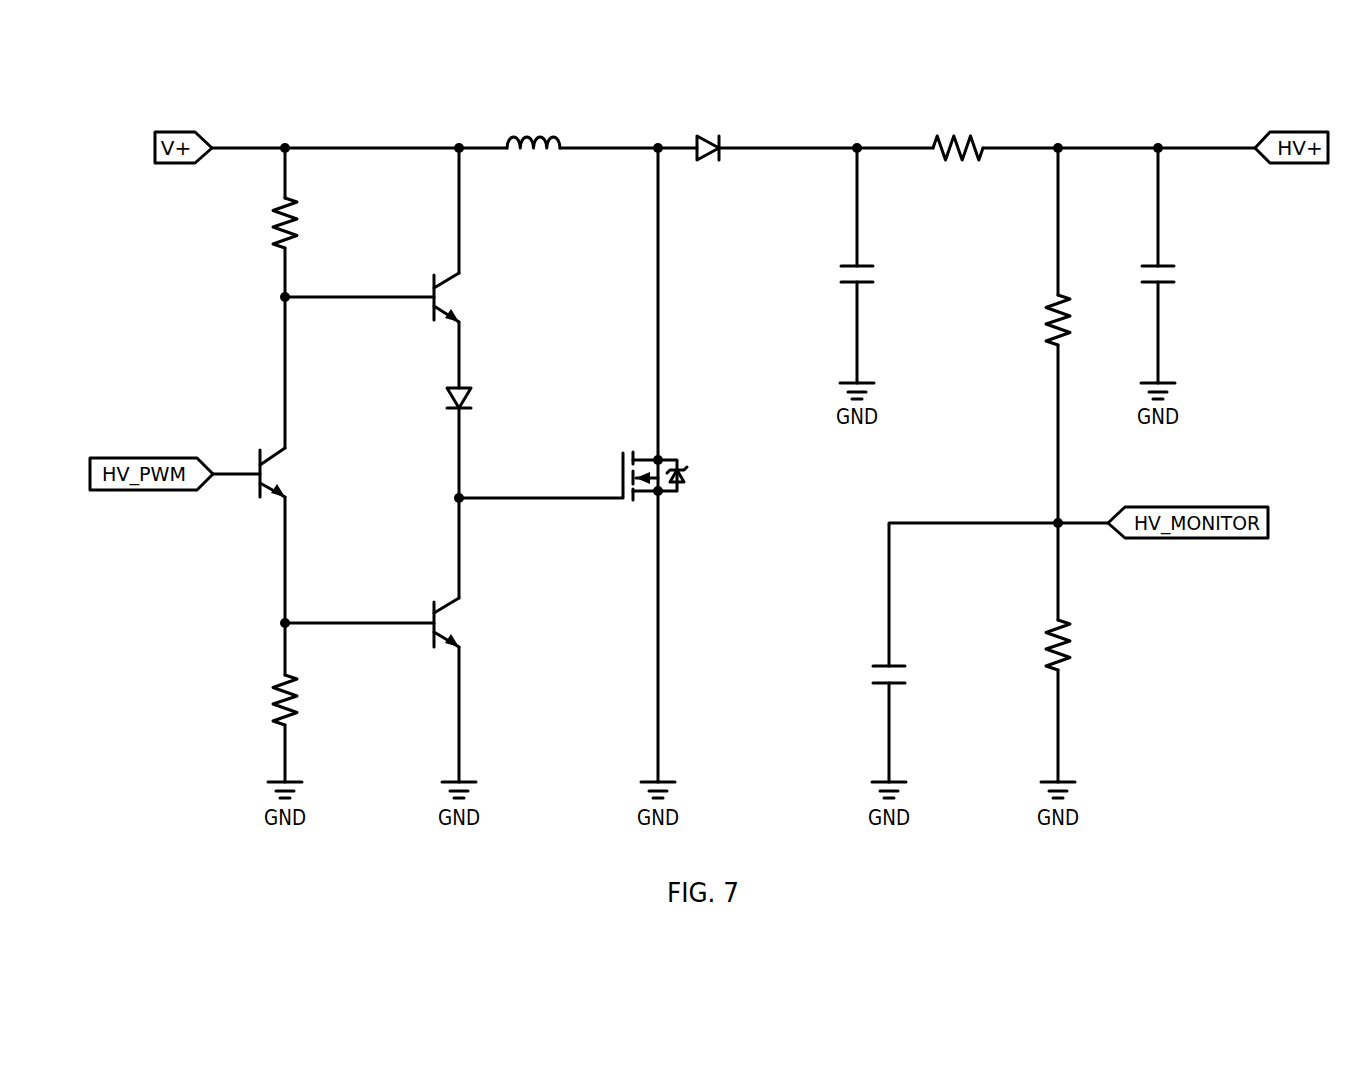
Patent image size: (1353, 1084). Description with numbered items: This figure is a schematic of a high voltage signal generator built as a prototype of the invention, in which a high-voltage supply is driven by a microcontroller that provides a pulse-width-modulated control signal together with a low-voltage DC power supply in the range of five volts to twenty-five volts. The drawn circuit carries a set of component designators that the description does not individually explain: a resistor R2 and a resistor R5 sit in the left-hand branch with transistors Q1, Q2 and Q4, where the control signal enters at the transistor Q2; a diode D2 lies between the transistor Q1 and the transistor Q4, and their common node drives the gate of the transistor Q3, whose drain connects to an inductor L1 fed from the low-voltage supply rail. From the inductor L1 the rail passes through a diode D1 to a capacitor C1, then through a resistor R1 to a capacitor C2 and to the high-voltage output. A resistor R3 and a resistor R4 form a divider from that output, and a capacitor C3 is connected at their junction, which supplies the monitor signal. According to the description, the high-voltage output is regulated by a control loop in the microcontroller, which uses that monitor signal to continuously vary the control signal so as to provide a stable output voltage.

The inductor L1 is at (533, 127).
The diode D1 is at (707, 164).
The resistor R1 is at (958, 165).
The capacitor C1 is at (843, 265).
The capacitor C2 is at (1144, 265).
The resistor R3 is at (1042, 320).
The resistor R2 is at (269, 223).
The transistor Q1 is at (391, 297).
The diode D2 is at (475, 391).
The MOSFET transistor Q3 is at (592, 476).
The transistor Q2 is at (269, 472).
The transistor Q4 is at (392, 622).
The resistor R5 is at (269, 700).
The capacitor C3 is at (949, 652).
The resistor R4 is at (1042, 645).